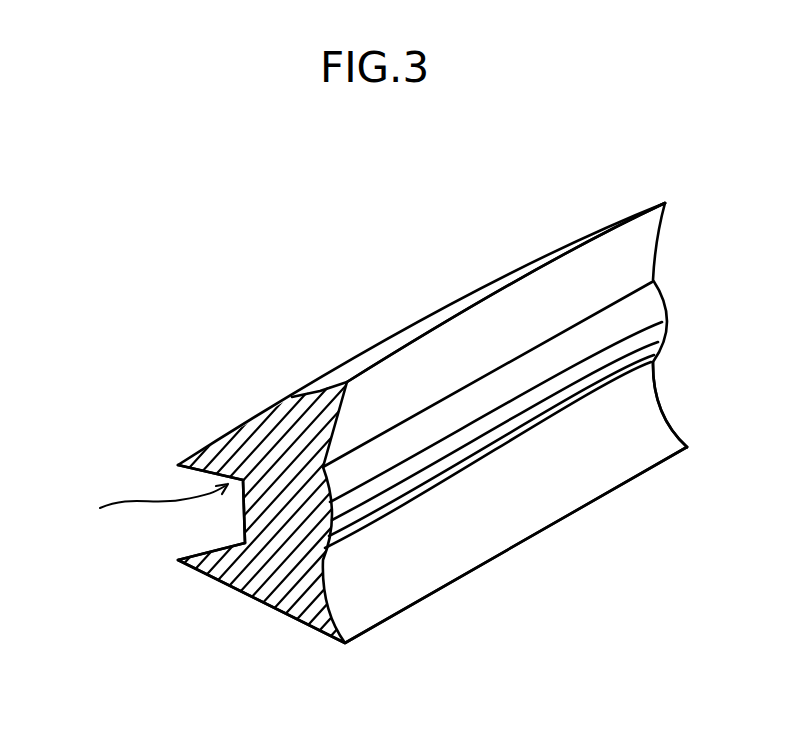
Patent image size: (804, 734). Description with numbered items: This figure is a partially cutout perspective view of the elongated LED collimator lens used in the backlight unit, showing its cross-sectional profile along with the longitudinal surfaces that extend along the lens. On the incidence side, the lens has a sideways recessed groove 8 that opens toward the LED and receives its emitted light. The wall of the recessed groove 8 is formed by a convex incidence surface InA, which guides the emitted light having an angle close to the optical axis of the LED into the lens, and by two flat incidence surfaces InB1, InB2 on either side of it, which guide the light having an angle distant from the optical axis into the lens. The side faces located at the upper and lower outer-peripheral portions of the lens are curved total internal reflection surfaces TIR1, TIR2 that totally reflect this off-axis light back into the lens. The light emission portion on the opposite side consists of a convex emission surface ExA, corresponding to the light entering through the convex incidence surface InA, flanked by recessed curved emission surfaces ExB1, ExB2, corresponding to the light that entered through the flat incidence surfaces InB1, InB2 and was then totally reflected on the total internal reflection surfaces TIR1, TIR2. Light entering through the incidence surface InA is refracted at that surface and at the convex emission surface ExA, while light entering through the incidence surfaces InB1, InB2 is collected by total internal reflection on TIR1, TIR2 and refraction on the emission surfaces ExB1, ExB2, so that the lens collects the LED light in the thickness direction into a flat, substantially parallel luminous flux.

The total internal reflection surface TIR1 is at (297, 390).
The total internal reflection surface TIR2 is at (241, 600).
The recessed curved emission surface ExB1 is at (412, 368).
The convex emission surface ExA is at (497, 430).
The recessed curved emission surface ExB2 is at (480, 523).
The flat incidence surface InB1 is at (197, 470).
The convex incidence surface InA is at (245, 518).
The flat incidence surface InB2 is at (235, 540).
The recessed groove 8 is at (155, 505).